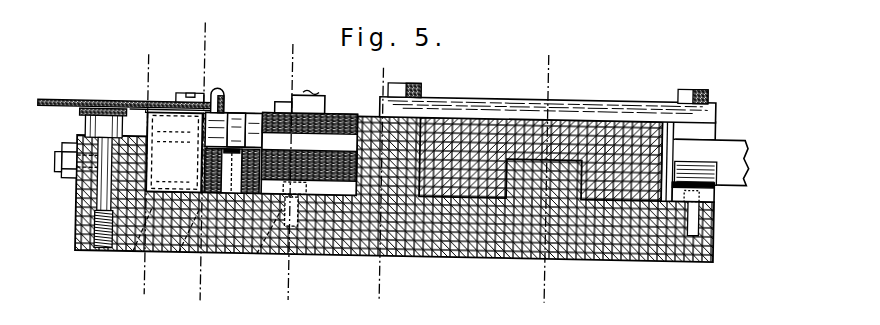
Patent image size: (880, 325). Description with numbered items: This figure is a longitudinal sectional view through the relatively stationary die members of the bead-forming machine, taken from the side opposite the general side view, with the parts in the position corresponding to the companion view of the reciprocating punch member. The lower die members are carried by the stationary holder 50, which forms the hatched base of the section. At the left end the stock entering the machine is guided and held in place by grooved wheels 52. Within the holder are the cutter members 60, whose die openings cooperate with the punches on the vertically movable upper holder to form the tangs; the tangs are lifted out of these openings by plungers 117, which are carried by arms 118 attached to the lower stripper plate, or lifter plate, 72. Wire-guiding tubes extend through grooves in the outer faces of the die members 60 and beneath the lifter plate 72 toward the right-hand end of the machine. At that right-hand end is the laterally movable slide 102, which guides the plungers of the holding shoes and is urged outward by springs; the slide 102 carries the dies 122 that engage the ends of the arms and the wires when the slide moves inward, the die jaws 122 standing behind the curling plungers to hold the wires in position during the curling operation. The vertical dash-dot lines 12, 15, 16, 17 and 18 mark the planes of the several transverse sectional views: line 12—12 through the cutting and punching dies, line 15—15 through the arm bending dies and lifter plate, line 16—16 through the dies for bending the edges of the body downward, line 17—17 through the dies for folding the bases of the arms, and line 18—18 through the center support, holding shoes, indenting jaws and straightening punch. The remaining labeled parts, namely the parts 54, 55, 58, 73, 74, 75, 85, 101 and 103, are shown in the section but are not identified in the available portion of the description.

The stationary holder 50 is at (453, 240).
The slide 102 is at (640, 190).
The clamping bar 103 is at (632, 108).
The cover plate 54 is at (56, 97).
The grooved wheels 52 is at (83, 114).
The cutter members 60 is at (174, 152).
The lower stripper plate 72 is at (242, 112).
The slide 85 is at (233, 113).
The pin 75 is at (217, 92).
The shaft 74 is at (308, 102).
The collar 55 is at (275, 112).
The rod 58 is at (735, 148).
The sleeve 101 is at (709, 173).
The dies 122 is at (713, 195).
The plungers 117 is at (133, 252).
The arms 118 is at (178, 253).
The passage 73 is at (258, 252).
The line 12— 12 is at (150, 176).
The line 15— 15 is at (205, 164).
The line 16— 16 is at (291, 174).
The line 17— 17 is at (384, 185).
The line 18— 18 is at (548, 180).